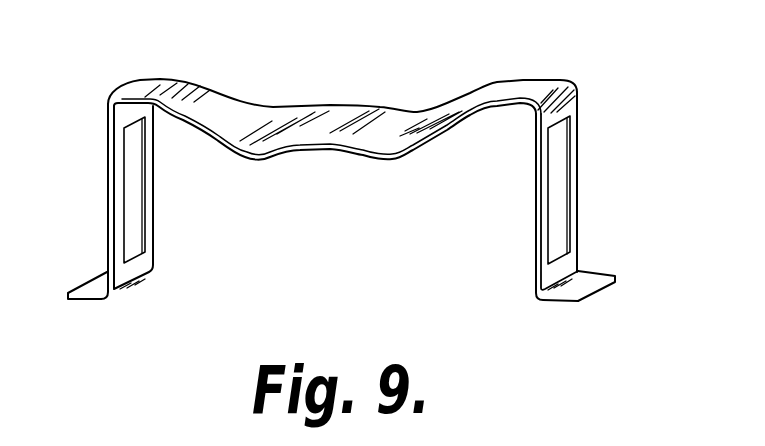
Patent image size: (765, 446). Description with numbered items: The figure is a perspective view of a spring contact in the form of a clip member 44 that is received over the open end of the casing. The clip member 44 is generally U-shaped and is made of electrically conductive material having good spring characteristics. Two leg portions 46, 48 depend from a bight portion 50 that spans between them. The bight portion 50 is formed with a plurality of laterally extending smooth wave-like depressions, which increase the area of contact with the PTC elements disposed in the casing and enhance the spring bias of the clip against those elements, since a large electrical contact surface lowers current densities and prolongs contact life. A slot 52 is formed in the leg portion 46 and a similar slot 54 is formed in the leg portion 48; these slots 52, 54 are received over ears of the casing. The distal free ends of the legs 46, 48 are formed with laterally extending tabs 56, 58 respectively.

The clip member 44 is at (354, 160).
The leg portion 46 is at (124, 201).
The leg portion 48 is at (577, 196).
The bight portion 50 is at (391, 72).
The slot 52 is at (139, 190).
The slot 54 is at (553, 222).
The tab 56 is at (91, 289).
The tab 58 is at (592, 278).